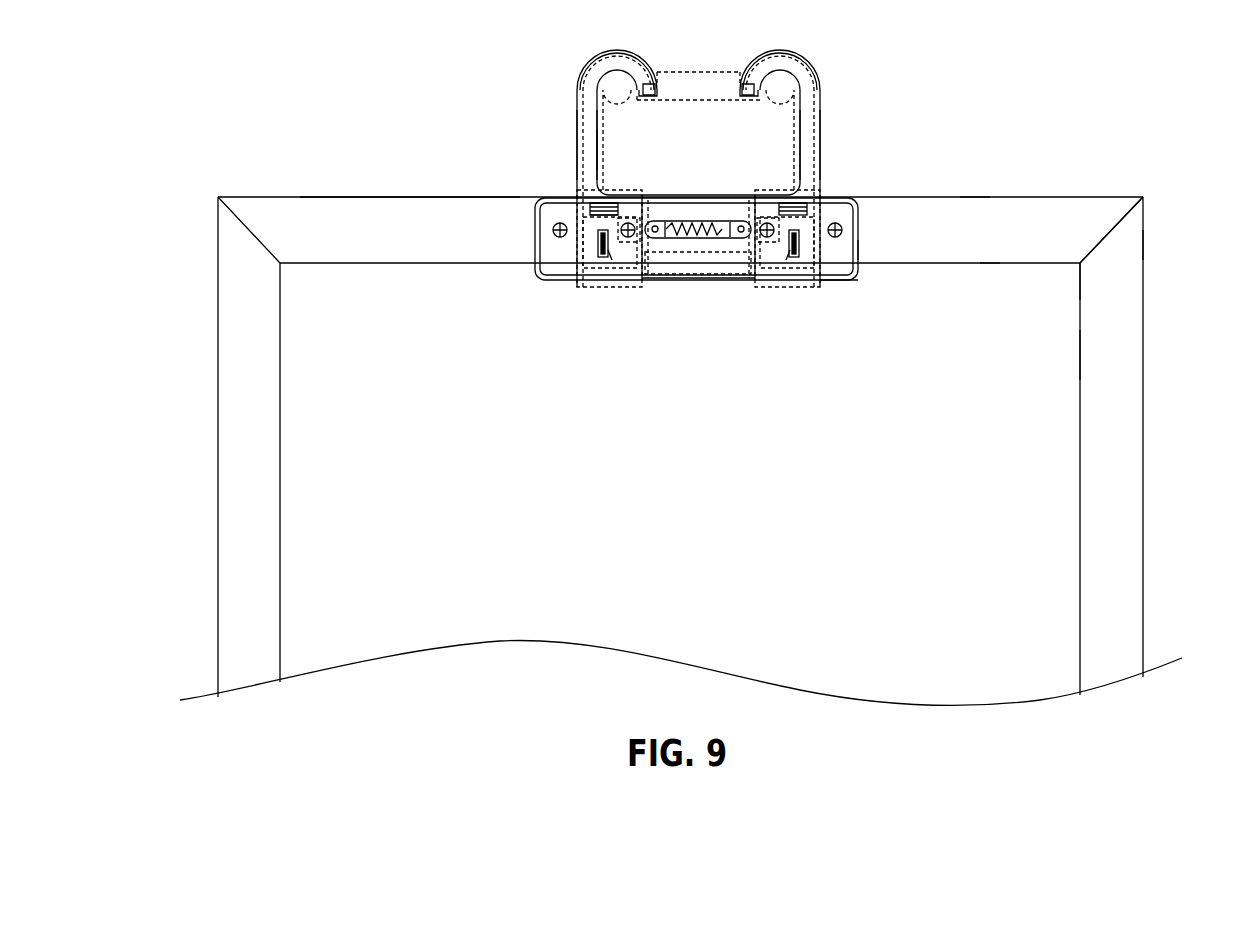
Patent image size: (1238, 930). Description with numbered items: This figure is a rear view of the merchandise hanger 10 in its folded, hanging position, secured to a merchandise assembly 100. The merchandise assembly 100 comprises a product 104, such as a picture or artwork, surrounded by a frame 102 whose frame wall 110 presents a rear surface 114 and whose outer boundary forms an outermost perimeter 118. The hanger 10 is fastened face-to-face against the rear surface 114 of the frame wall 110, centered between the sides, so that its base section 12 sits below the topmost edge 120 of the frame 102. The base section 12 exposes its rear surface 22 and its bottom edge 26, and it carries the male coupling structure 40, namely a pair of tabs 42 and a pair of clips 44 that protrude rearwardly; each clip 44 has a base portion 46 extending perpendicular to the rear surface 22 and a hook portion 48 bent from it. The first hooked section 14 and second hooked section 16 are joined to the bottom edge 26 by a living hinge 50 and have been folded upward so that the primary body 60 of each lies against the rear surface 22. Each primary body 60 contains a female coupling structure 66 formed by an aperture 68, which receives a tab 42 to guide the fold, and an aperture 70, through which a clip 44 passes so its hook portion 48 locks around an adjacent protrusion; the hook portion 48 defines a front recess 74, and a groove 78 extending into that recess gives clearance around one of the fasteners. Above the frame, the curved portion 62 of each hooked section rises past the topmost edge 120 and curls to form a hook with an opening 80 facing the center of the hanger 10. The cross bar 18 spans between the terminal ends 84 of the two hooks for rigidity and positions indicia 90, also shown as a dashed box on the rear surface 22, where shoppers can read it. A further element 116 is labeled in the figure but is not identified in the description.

The hanger 10 is at (571, 80).
The base section 12 is at (560, 210).
The first hooked section 14 is at (806, 100).
The second hooked section 16 is at (586, 105).
The cross bar 18 is at (714, 79).
The rear surface 22 is at (860, 252).
The bottom edge 26 is at (555, 230).
The male coupling structure 40 is at (790, 207).
The tab 42 is at (598, 257).
The clip 44 is at (815, 210).
The base portion 46 is at (585, 205).
The hook portion 48 is at (617, 204).
The living hinge 50 is at (612, 284).
The primary body 60 is at (612, 262).
The curved portion 62 is at (608, 65).
The female coupling structure 66 is at (843, 282).
The aperture 68 is at (615, 258).
The aperture 70 is at (610, 213).
The front recess 74 is at (598, 137).
The groove 78 is at (655, 195).
The opening 80 is at (640, 100).
The terminal end 84 is at (648, 88).
The indicia 90 is at (698, 275).
The merchandise assembly 100 is at (291, 218).
The frame 102 is at (1063, 212).
The product 104 is at (1045, 353).
The frame wall 110 is at (990, 213).
The rear surface 114 is at (335, 217).
The spring 116 is at (712, 222).
The outermost perimeter 118 is at (1143, 243).
The topmost edge 120 is at (975, 197).